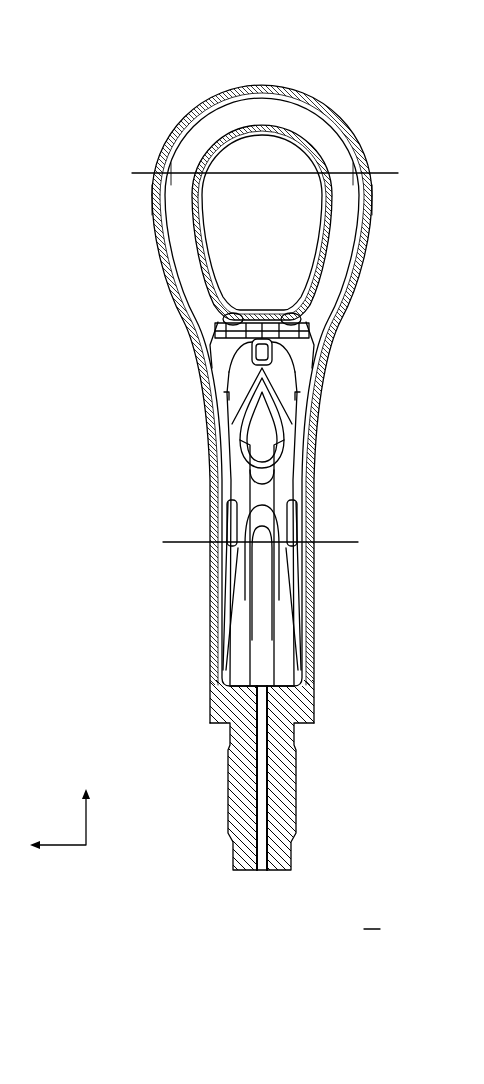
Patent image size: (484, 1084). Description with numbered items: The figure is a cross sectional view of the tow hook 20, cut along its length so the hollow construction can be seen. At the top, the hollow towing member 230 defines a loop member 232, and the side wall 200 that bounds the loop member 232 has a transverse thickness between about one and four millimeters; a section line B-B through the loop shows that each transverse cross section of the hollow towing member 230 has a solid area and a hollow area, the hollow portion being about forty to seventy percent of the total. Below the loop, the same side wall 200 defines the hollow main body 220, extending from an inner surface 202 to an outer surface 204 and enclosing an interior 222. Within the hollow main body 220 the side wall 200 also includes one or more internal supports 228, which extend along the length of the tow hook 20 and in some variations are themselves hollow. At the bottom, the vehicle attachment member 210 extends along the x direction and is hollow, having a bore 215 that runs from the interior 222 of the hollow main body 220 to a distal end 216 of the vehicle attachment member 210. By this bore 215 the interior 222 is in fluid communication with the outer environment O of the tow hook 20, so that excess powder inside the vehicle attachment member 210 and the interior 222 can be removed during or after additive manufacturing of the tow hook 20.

The tow hook 20 is at (331, 57).
The side wall 200 is at (323, 415).
The inner surface 202 is at (303, 480).
The outer surface 204 is at (312, 523).
The vehicle attachment member 210 is at (219, 793).
The bore 215 is at (260, 772).
The distal end 216 is at (247, 873).
The hollow main body 220 is at (200, 510).
The interior 222 is at (260, 645).
The internal supports 228 is at (236, 365).
The hollow towing member 230 is at (150, 139).
The loop member 232 is at (349, 130).